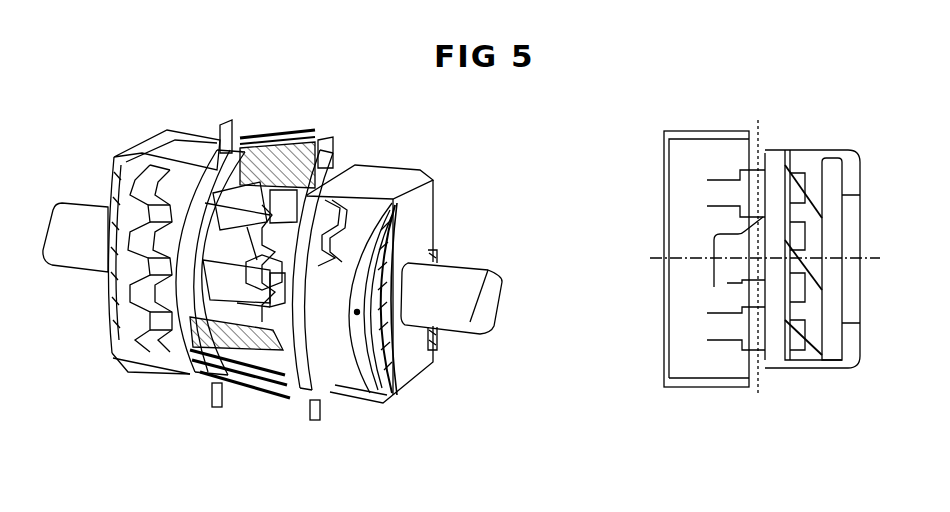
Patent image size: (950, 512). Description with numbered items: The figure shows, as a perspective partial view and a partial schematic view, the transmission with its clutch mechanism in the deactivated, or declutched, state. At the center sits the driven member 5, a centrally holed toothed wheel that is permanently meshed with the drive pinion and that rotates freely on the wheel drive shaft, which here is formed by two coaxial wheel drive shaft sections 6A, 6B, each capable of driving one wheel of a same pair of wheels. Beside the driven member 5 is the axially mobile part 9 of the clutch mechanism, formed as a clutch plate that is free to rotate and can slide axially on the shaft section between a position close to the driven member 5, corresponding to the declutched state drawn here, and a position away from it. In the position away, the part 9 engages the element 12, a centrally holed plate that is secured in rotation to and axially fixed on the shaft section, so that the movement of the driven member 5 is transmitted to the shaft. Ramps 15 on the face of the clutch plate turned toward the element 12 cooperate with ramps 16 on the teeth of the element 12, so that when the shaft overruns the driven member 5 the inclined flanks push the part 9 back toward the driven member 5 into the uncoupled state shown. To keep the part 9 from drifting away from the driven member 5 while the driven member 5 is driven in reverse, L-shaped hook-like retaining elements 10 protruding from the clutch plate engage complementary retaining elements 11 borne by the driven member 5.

The driven member 5 is at (292, 137).
The wheel drive shaft section 6A is at (77, 199).
The wheel drive shaft section 6B is at (477, 263).
The axially mobile part 9 is at (305, 365).
The retaining elements 10 is at (258, 263).
The complementary retaining elements 11 is at (260, 326).
The element secured in rotation to the drive shaft 12 is at (364, 372).
The ramps 15 is at (806, 275).
The ramps 16 is at (822, 243).